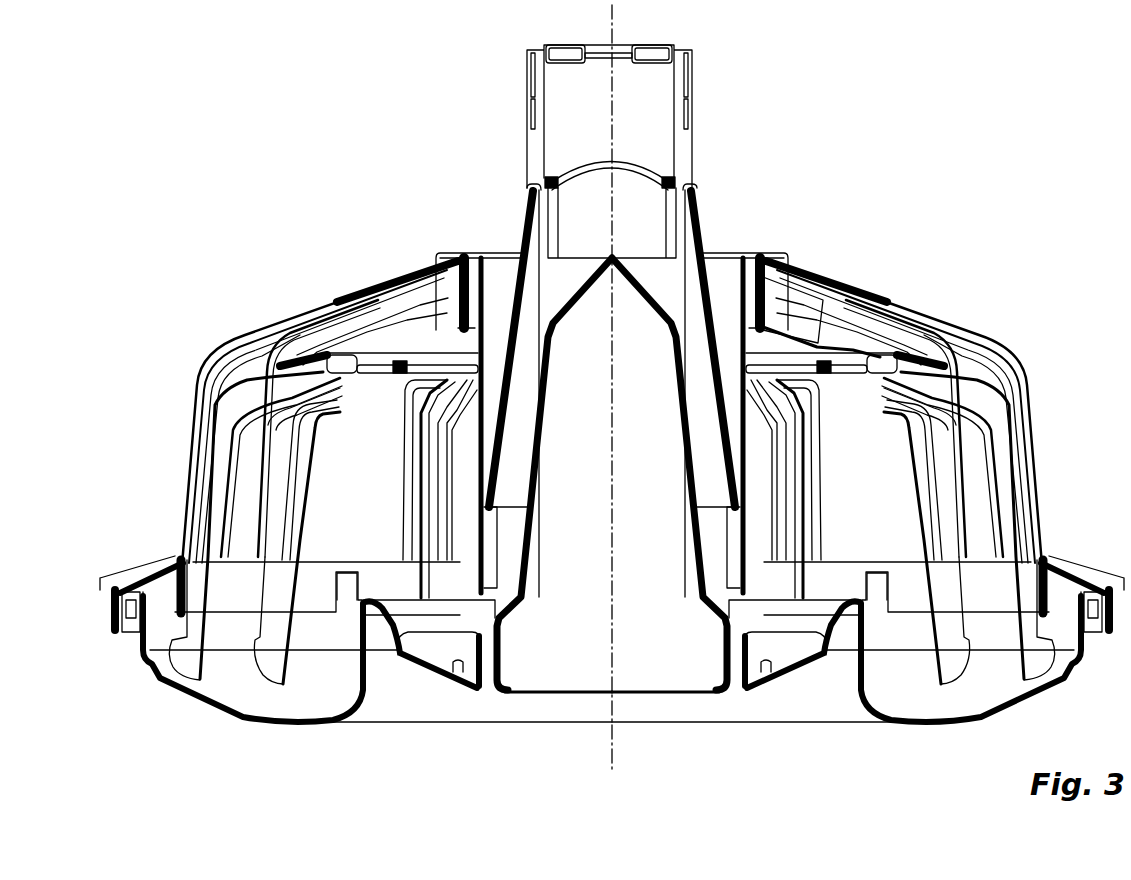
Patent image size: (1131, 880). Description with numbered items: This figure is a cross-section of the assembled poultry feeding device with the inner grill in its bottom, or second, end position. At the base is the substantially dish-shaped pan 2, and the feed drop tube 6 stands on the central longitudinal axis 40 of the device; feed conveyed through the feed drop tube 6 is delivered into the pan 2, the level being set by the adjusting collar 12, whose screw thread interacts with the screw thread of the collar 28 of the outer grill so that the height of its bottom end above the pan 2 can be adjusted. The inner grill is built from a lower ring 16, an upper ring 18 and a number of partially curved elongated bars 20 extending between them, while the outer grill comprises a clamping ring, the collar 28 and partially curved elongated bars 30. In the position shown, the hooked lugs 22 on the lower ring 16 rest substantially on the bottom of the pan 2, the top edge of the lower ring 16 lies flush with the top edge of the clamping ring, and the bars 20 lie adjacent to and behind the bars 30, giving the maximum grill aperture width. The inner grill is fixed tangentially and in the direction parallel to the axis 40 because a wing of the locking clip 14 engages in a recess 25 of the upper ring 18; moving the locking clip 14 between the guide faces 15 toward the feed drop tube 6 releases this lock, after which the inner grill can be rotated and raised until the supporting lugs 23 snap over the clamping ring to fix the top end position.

The pan 2 is at (250, 718).
The feed drop tube 6 is at (682, 143).
The adjusting collar 12 is at (746, 443).
The locking clip 14 is at (830, 343).
The guide faces 15 is at (783, 307).
The lower ring 16 is at (240, 587).
The upper ring 18 is at (292, 360).
The bars 20 is at (1030, 387).
The hooked lugs 22 is at (178, 665).
The supporting lugs 23 is at (351, 575).
The recesses 25 is at (398, 377).
The collar 28 is at (800, 283).
The bars 30 is at (1007, 347).
The inner cone 40 is at (608, 432).